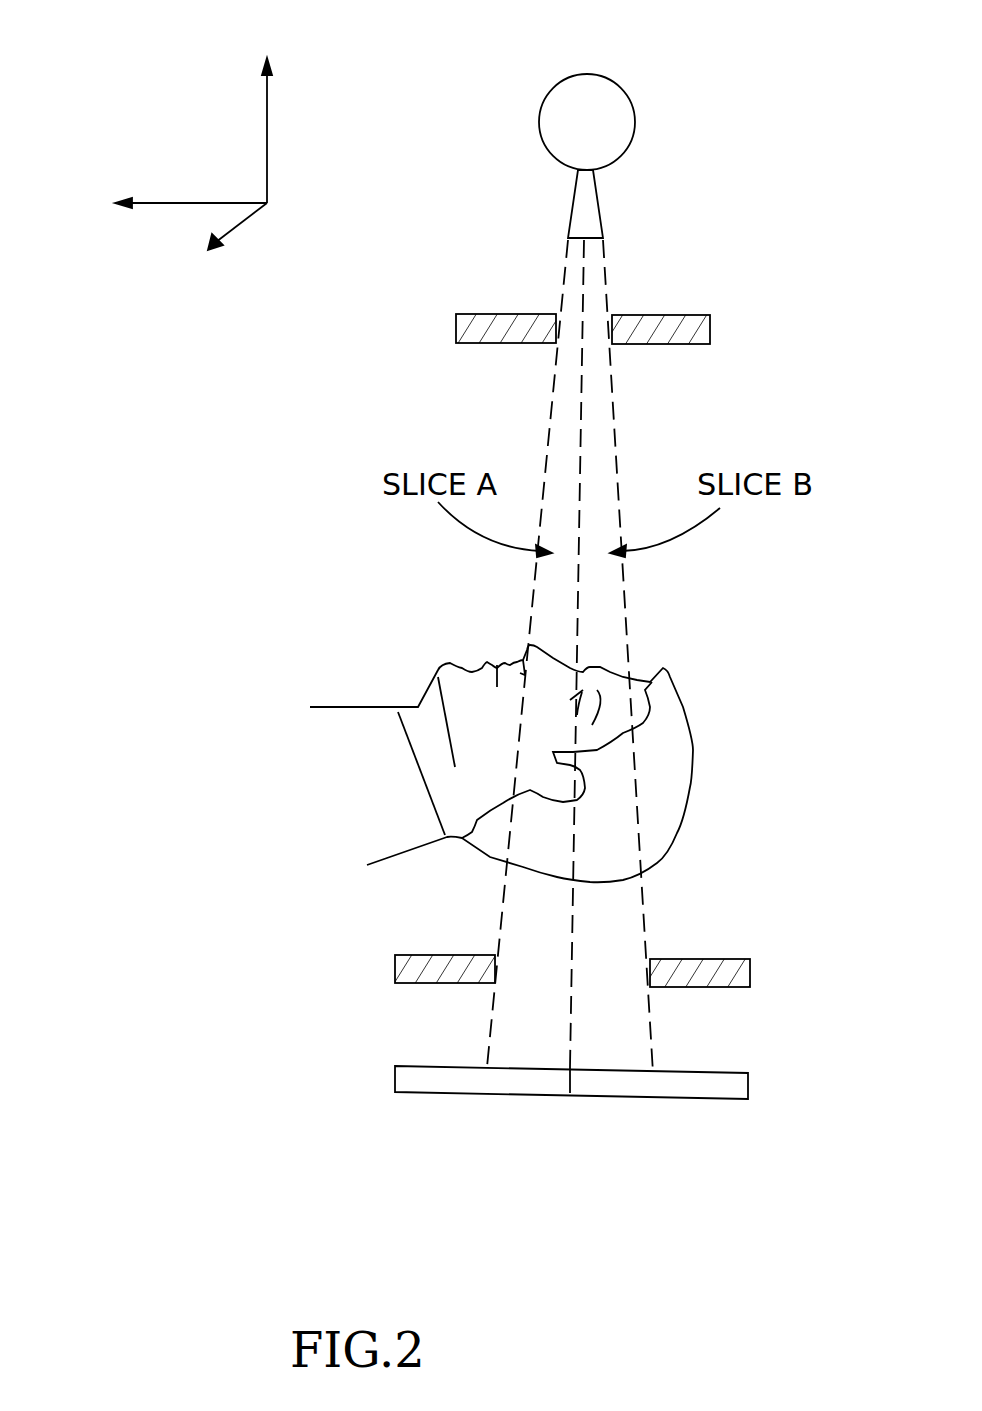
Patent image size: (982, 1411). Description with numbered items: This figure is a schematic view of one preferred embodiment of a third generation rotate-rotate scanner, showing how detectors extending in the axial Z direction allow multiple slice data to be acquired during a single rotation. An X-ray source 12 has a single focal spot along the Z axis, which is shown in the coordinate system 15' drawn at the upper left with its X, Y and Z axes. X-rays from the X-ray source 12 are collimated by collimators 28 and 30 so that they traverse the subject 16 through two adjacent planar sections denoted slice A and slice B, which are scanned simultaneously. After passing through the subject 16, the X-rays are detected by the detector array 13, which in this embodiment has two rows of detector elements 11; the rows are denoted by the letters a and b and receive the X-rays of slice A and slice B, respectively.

The detector elements 11 is at (750, 1082).
The X-ray source 12 is at (597, 90).
The detector array 13 is at (571, 1110).
The coordinate system 15' is at (230, 154).
The subject 16 is at (367, 743).
The collimator 28 is at (690, 325).
The collimator 30 is at (752, 971).